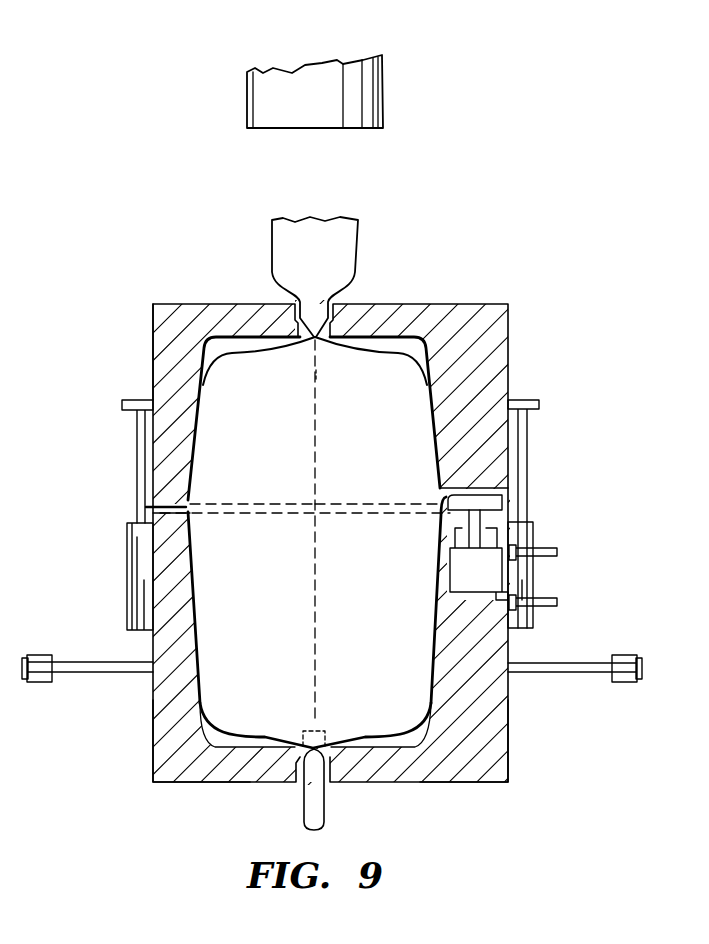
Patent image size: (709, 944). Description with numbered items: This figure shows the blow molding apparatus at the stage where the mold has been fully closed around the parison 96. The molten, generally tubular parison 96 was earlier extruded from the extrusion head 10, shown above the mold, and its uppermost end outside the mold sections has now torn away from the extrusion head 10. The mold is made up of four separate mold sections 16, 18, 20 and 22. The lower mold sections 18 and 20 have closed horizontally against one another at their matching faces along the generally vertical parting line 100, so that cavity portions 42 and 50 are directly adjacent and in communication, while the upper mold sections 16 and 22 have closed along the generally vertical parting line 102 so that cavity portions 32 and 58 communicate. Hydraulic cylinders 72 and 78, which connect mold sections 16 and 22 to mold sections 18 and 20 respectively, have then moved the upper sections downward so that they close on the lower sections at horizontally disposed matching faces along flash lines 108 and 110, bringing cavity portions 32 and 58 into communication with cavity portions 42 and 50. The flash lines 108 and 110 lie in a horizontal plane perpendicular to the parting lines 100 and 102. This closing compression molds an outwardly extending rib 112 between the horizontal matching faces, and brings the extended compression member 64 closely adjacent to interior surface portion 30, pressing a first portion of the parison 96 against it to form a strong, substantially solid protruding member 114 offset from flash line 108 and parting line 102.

The extrusion head 10 is at (383, 108).
The mold section 16 is at (490, 303).
The mold section 18 is at (508, 770).
The mold section 20 is at (153, 762).
The mold section 22 is at (153, 320).
The interior surface portion 30 is at (465, 487).
The cavity portion 32 is at (389, 455).
The cavity portion 42 is at (393, 612).
The cavity portion 50 is at (270, 610).
The cavity portion 58 is at (268, 455).
The compression member 64 is at (505, 508).
The hydraulic cylinder 72 is at (533, 527).
The hydraulic cylinder 78 is at (127, 582).
The parison 96 is at (222, 358).
The parting line 100 is at (318, 676).
The parting line 102 is at (318, 378).
The flash line 108 is at (360, 504).
The flash line 110 is at (255, 504).
The outwardly extending rib 112 is at (147, 508).
The protruding member 114 is at (503, 500).